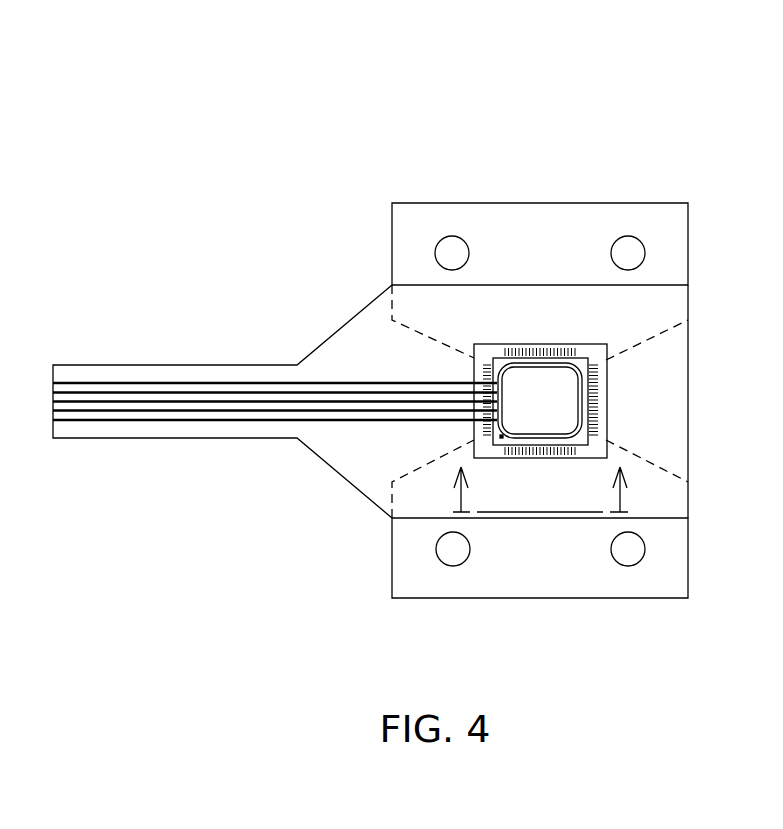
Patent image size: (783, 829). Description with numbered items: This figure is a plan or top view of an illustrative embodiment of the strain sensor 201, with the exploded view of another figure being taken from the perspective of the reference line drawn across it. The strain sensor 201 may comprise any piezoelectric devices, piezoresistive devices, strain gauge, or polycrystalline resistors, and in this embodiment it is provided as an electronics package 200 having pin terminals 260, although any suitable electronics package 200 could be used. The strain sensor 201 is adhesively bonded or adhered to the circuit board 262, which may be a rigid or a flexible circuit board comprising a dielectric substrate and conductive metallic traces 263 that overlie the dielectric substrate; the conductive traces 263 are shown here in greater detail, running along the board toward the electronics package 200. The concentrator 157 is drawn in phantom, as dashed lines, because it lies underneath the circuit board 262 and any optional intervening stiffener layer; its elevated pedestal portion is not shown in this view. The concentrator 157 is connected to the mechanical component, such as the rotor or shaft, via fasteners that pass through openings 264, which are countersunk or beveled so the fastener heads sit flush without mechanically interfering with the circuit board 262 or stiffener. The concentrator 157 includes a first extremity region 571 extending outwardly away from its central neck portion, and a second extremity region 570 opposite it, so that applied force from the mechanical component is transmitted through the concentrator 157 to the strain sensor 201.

The strain sensor 201 is at (413, 363).
The first extremity region 571 is at (530, 242).
The lower mounting section 570 is at (545, 546).
The openings 264 is at (442, 265).
The concentrator 157 is at (654, 336).
The pin terminals 260 is at (597, 415).
The electronics package 200 is at (548, 383).
The circuit board 262 is at (370, 335).
The conductive metallic traces 263 is at (218, 447).